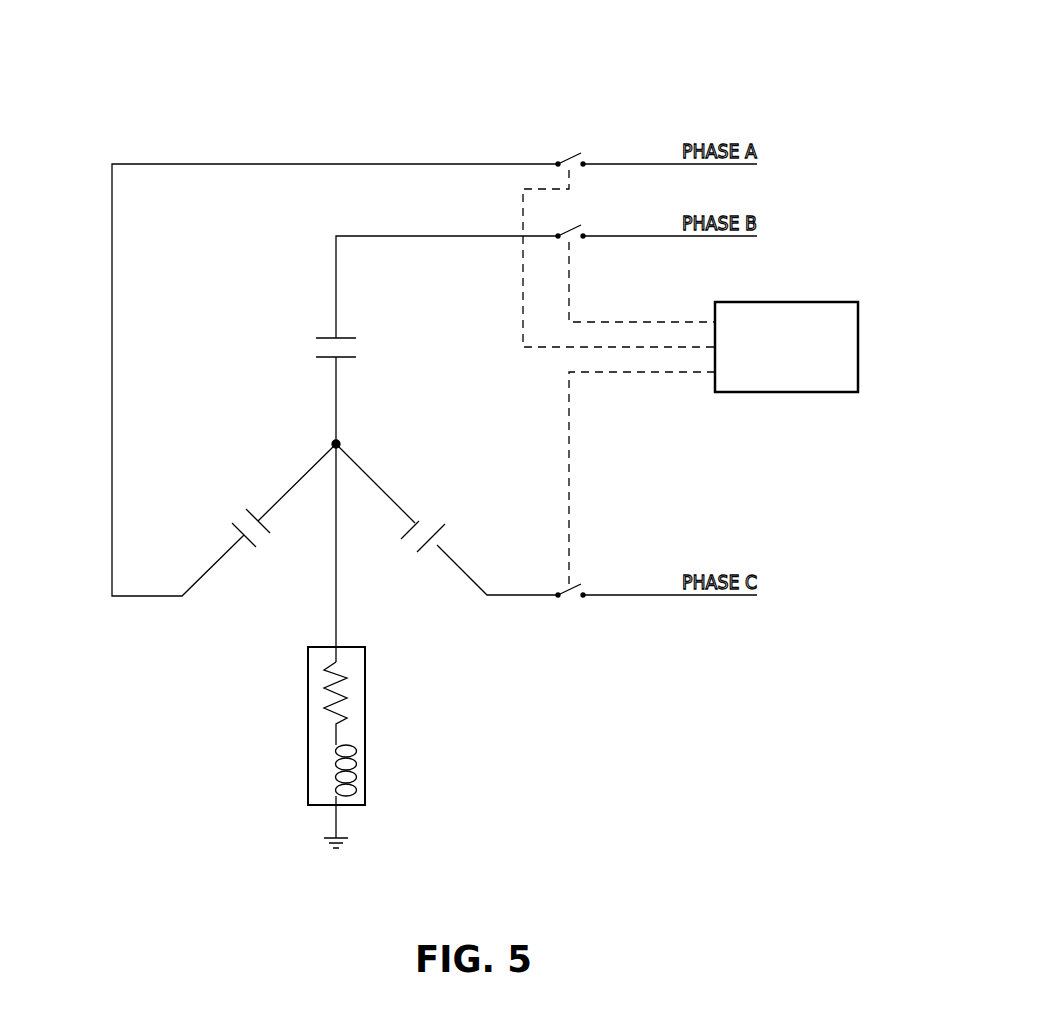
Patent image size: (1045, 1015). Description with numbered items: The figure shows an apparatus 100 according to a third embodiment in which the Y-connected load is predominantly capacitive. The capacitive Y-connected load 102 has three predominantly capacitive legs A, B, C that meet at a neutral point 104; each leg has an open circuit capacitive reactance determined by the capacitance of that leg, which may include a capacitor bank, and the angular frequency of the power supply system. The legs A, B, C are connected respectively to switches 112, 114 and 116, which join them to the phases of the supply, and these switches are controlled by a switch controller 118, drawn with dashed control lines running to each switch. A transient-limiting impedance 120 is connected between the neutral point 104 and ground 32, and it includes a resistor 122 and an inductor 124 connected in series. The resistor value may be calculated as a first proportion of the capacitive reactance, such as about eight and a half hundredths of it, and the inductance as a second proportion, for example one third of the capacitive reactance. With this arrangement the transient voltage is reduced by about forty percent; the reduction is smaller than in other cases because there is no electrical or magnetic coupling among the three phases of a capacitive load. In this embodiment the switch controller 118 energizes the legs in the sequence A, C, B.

The apparatus 100 is at (705, 58).
The capacitive Y-connected load 102 is at (415, 404).
The neutral point 104 is at (332, 441).
The switch 112 is at (582, 140).
The switch 114 is at (582, 213).
The switch 116 is at (583, 572).
The switch controller 118 is at (803, 379).
The transient-limiting impedance 120 is at (308, 730).
The resistor 122 is at (342, 695).
The inductor 124 is at (356, 771).
The ground 32 is at (345, 838).
The capacitive leg A is at (243, 512).
The capacitive leg B is at (350, 337).
The capacitive leg C is at (428, 516).